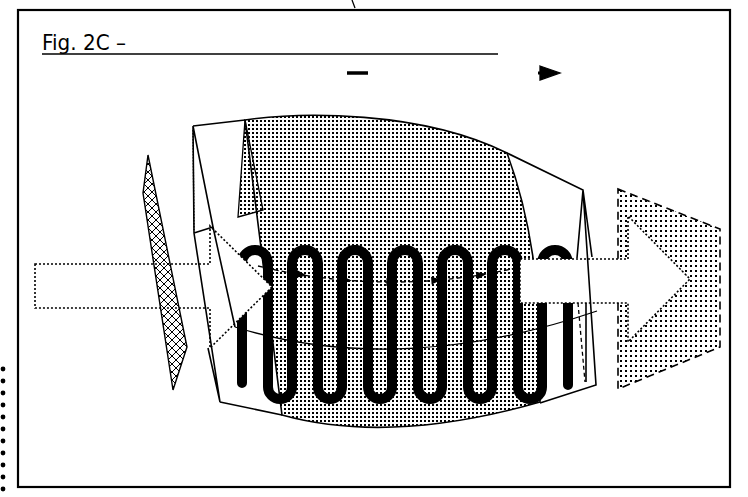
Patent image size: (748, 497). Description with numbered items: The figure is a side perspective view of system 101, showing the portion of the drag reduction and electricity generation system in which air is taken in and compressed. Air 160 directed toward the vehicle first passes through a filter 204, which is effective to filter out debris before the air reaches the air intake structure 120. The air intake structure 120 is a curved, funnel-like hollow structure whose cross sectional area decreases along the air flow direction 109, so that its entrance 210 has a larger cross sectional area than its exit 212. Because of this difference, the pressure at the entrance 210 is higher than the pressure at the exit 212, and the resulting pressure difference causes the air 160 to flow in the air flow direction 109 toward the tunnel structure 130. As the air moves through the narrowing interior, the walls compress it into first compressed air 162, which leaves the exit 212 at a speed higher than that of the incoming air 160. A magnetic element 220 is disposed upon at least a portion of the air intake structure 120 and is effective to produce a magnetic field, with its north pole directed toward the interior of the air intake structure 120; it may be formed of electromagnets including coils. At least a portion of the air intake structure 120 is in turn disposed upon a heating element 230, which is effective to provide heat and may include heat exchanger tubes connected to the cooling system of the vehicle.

The system 101 is at (379, 249).
The air flow direction 109 is at (453, 73).
The air intake structure 120 is at (238, 402).
The tunnel structure 130 is at (677, 210).
The air 160 is at (132, 293).
The first compressed air 162 is at (652, 278).
The filter 204 is at (145, 193).
The entrance 210 is at (193, 182).
The exit 212 is at (586, 247).
The magnetic element 220 is at (450, 111).
The heating element 230 is at (568, 382).